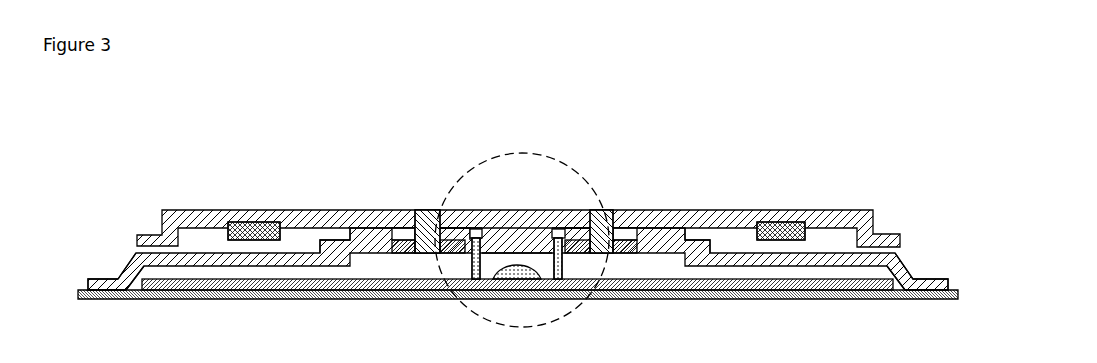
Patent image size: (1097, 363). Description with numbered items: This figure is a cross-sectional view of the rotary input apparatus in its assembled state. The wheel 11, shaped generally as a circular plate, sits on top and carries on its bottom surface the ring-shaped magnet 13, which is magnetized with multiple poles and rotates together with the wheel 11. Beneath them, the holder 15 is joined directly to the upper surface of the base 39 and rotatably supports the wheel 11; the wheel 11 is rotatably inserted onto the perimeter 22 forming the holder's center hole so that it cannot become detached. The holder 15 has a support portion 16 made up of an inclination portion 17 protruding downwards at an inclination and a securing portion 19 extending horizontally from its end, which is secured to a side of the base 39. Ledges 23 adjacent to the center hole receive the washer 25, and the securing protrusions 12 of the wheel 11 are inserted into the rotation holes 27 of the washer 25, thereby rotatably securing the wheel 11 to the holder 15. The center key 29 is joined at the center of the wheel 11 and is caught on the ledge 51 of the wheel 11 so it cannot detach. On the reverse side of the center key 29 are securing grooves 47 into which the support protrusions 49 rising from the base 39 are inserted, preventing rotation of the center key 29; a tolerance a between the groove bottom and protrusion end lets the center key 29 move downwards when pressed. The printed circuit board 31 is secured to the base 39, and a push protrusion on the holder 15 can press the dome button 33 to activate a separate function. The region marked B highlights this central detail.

The wheel 11 is at (182, 210).
The securing protrusions 12 is at (430, 254).
The magnet 13 is at (263, 222).
The holder 15 is at (357, 240).
The support portion 16 is at (900, 256).
The inclination portion 17 is at (135, 253).
The securing portion 19 is at (98, 279).
The perimeter 22 is at (338, 240).
The ledges 23 is at (399, 254).
The washer 25 is at (472, 210).
The rotation holes 27 is at (400, 240).
The center key 29 is at (532, 210).
The printed circuit board 31 is at (657, 300).
The dome button 33 is at (514, 279).
The base 39 is at (138, 300).
The securing grooves 47 is at (481, 279).
The support protrusions 49 is at (565, 279).
The ledge 51 is at (452, 210).
The region B is at (552, 157).
The tolerance a is at (572, 210).